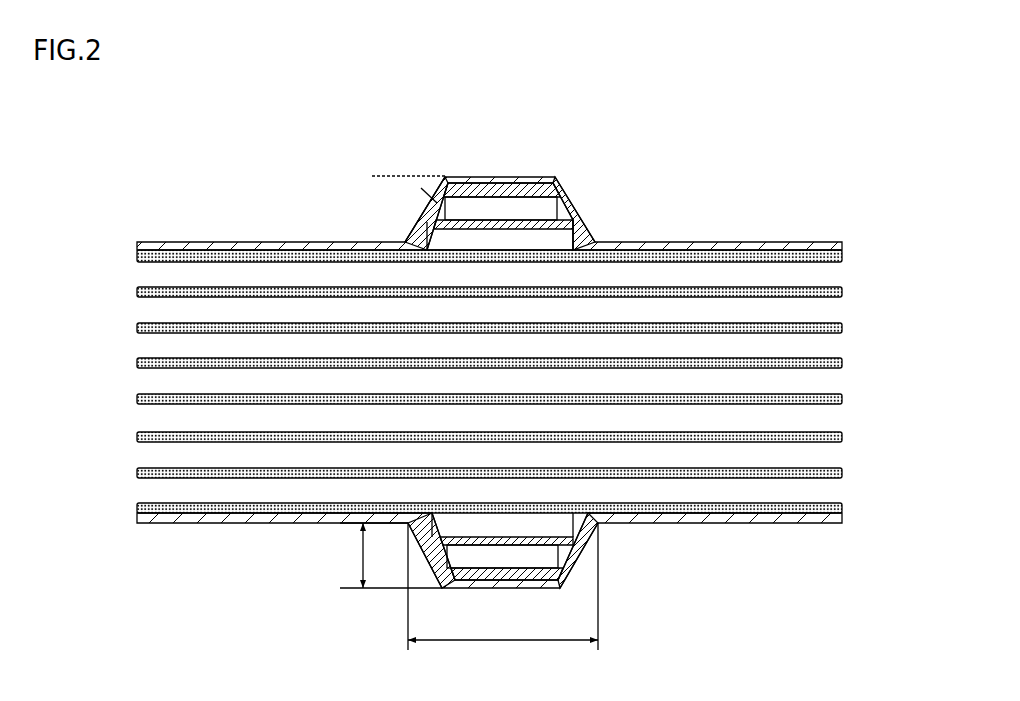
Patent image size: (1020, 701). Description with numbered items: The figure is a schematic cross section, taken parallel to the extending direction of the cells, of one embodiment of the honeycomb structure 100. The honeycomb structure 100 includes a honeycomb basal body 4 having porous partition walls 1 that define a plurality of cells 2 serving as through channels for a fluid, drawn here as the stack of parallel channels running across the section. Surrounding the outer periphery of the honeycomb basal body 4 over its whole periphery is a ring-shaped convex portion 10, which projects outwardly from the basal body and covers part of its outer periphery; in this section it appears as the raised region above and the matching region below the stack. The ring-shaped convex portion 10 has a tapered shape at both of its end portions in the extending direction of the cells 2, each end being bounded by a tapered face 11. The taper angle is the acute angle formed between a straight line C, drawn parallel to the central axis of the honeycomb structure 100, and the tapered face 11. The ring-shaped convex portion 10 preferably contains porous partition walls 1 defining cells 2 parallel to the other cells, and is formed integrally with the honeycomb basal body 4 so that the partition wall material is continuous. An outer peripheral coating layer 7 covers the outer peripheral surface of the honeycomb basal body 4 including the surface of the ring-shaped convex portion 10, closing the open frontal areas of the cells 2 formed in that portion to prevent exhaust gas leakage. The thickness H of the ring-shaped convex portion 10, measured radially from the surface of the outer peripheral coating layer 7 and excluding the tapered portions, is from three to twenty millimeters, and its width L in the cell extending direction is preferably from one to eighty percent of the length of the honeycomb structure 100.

The porous partition walls 1 is at (565, 240).
The cells 2 is at (568, 237).
The honeycomb basal body 4 is at (214, 242).
The outer peripheral coating layer 7 is at (693, 241).
The ring-shaped convex portion 10 is at (557, 162).
The tapered face 11 is at (416, 224).
The honeycomb structure 100 is at (755, 150).
The straight line parallel to the central axis C is at (382, 175).
The thickness of the ring-shaped convex portion H is at (391, 555).
The width of the ring-shaped convex portion L is at (503, 598).